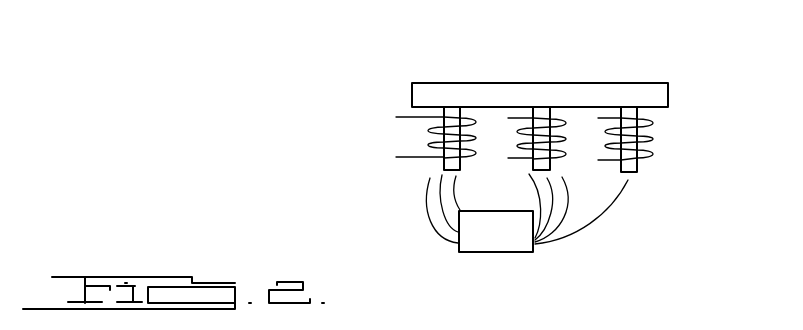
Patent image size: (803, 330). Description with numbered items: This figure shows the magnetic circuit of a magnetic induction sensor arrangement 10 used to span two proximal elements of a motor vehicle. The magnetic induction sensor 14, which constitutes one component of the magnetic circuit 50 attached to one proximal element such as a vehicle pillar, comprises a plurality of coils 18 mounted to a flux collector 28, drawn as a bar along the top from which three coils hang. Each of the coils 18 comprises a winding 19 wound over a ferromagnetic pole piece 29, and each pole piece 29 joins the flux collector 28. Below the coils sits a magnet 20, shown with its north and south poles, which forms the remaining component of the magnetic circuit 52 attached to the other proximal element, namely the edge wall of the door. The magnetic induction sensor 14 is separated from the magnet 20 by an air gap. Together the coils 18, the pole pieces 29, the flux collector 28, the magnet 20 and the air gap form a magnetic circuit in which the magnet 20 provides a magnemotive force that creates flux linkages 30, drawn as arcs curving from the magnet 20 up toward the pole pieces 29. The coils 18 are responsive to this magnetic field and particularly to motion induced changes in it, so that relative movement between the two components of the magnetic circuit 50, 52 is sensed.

The magnetic sensor device 10 is at (703, 69).
The magnetic induction sensor 14 is at (431, 145).
The one component of the magnetic circuit 50 is at (368, 156).
The coils 18 is at (421, 169).
The winding 19 is at (400, 117).
The magnet 20 is at (498, 252).
The flux collector 28 is at (668, 96).
The ferromagnetic pole piece 29 is at (452, 106).
The flux linkages 30 is at (427, 226).
The remaining component of the magnetic circuit 52 is at (442, 238).